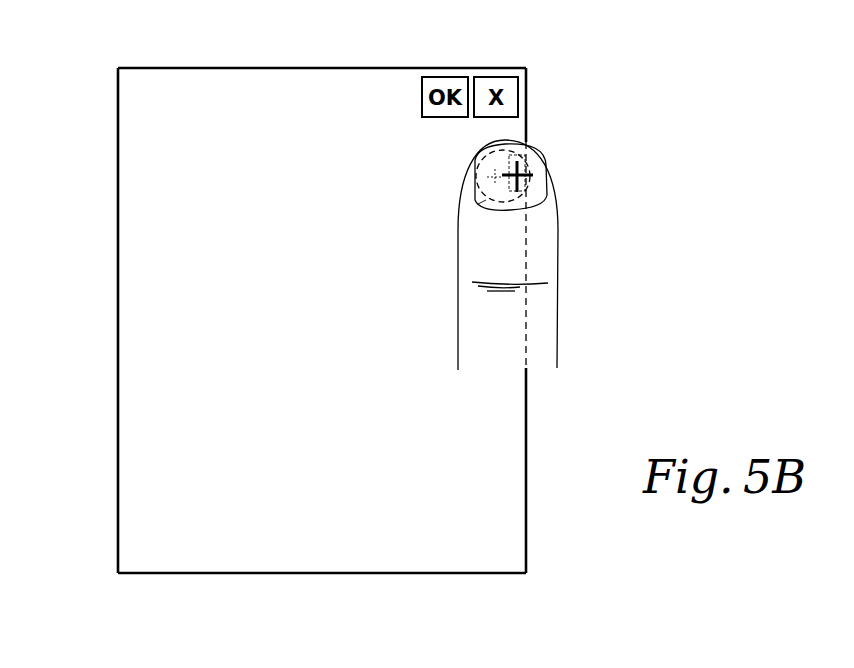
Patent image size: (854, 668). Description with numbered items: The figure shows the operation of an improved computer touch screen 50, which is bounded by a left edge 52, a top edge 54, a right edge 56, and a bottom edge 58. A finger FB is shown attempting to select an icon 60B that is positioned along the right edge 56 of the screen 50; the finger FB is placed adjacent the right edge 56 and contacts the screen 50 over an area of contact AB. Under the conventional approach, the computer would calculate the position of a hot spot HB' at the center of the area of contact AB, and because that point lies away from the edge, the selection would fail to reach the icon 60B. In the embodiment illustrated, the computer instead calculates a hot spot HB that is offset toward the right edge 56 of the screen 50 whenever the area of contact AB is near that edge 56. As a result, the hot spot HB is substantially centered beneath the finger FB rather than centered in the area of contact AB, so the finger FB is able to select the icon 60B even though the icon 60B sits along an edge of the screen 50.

The touch screen 50 is at (317, 331).
The left edge 52 is at (118, 320).
The top edge 54 is at (322, 68).
The right edge 56 is at (527, 426).
The bottom edge 58 is at (292, 575).
The icon 60B is at (482, 150).
The hot spot HB is at (547, 164).
The hot spot HB' is at (459, 188).
The area of contact AB is at (483, 202).
The finger FB is at (558, 208).